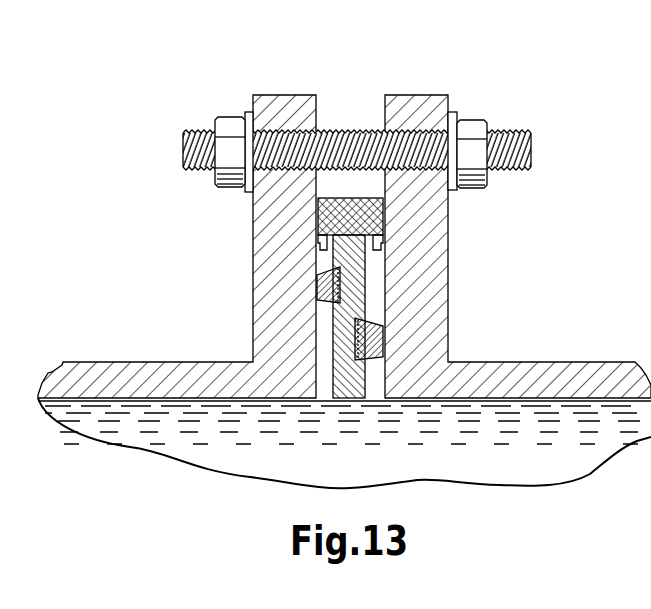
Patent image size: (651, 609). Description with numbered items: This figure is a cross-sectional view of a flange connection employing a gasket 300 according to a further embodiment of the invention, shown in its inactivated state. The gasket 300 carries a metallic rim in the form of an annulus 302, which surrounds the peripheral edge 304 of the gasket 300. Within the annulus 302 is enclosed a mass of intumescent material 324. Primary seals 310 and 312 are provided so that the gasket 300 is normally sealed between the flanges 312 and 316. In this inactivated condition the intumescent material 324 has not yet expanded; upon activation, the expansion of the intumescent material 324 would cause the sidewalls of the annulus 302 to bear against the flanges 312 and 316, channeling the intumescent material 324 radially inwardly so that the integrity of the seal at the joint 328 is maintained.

The gasket 300 is at (375, 455).
The annulus 302 is at (340, 198).
The peripheral edge 304 is at (322, 215).
The primary seal 310 is at (318, 300).
The primary seal / flange 312 is at (262, 280).
The flange 316 is at (427, 337).
The intumescent material 324 is at (375, 252).
The joint 328 is at (355, 92).